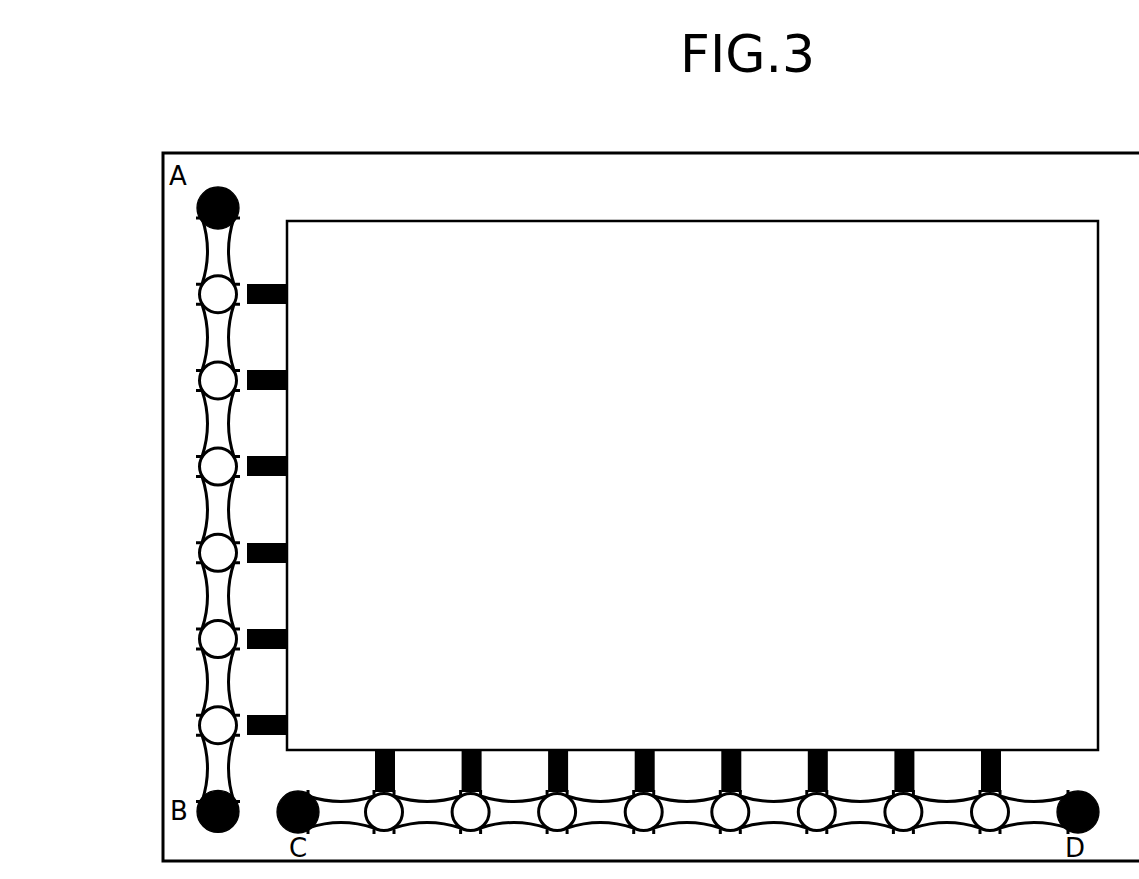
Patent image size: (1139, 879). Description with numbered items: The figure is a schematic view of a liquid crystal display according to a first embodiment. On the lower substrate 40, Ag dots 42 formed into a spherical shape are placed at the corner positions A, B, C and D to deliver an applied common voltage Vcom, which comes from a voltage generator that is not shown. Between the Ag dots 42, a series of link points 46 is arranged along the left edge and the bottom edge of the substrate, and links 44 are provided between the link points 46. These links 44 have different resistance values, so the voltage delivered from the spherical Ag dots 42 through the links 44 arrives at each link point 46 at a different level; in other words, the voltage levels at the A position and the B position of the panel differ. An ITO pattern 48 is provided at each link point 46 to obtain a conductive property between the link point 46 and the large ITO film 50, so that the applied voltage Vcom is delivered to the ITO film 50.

The lower substrate 40 is at (1056, 153).
The Ag dots 42 is at (200, 196).
The links 44 is at (210, 258).
The link points 46 is at (201, 302).
The ITO pattern 48 is at (266, 285).
The ITO film 50 is at (893, 331).